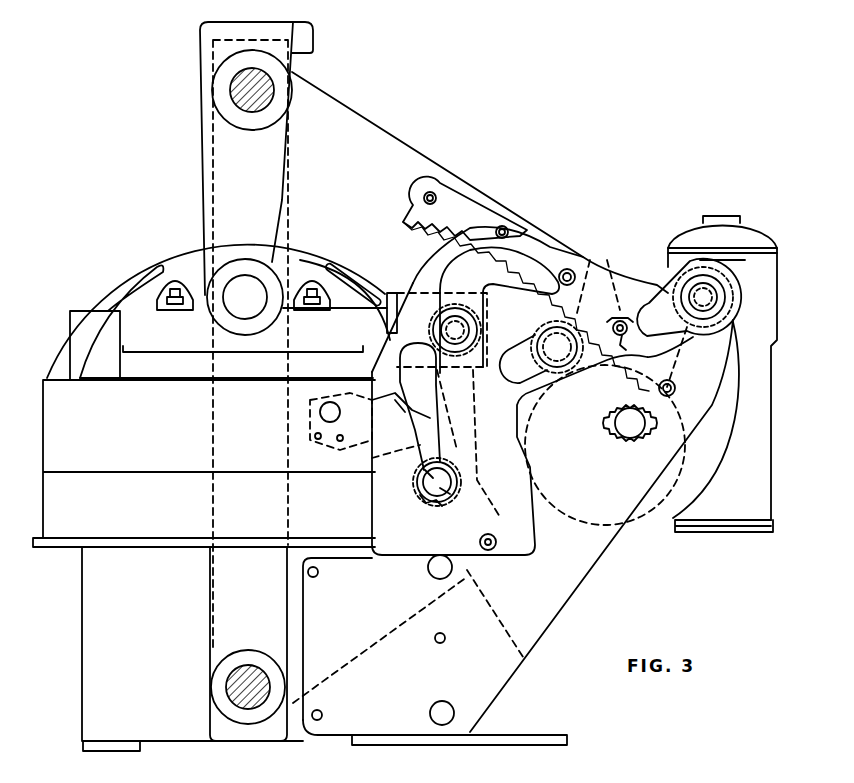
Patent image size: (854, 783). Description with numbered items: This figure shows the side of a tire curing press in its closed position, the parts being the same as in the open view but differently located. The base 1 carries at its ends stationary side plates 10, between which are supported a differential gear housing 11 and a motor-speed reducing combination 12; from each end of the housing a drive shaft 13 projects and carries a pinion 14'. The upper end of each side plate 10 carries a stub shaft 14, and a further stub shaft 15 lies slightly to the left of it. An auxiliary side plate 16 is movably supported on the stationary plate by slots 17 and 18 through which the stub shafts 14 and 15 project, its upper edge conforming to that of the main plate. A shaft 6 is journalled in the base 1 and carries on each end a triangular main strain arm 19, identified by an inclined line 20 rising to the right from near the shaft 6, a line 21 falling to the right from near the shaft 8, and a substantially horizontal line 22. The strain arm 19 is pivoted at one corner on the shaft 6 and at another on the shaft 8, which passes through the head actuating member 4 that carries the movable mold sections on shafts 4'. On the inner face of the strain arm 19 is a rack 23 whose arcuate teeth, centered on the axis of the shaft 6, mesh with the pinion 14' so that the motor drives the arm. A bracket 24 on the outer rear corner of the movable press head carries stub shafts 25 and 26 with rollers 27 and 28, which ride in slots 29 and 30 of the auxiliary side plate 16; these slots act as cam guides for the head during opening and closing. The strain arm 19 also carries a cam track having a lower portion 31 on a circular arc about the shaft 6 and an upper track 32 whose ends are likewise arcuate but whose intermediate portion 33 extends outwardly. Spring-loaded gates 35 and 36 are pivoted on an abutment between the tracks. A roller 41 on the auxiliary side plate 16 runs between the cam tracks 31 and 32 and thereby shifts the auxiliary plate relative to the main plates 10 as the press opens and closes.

The base 1 is at (530, 707).
The head actuating member 4 is at (264, 381).
The shafts 4' is at (245, 297).
The shaft 6 is at (243, 668).
The shaft 8 is at (272, 82).
The stationary side plates 10 is at (575, 572).
The differential gear housing 11 is at (660, 505).
The motor-speed reducing combination 12 is at (737, 505).
The drive shaft 13 is at (627, 433).
The stub shaft 14 is at (719, 297).
The pinion 14' is at (640, 441).
The stub shaft 15 is at (537, 337).
The auxiliary side plate 16 is at (562, 388).
The slot 17 is at (660, 307).
The slot 18 is at (513, 380).
The main strain arm 19 is at (388, 158).
The inclined line 20 is at (213, 417).
The line 21 is at (447, 168).
The line 22 is at (417, 615).
The rack 23 is at (457, 213).
The bracket 24 is at (392, 290).
The stub shaft 25 is at (455, 330).
The stub shaft 26 is at (433, 503).
The roller 27 is at (453, 310).
The roller 28 is at (425, 500).
The slot 29 is at (448, 267).
The slot 30 is at (450, 383).
The lower portion of cam track 31 is at (387, 465).
The upper track 32 is at (409, 597).
The intermediate portion 33 is at (552, 377).
The gate 35 is at (457, 477).
The gate 36 is at (377, 420).
The roller 41 is at (490, 550).